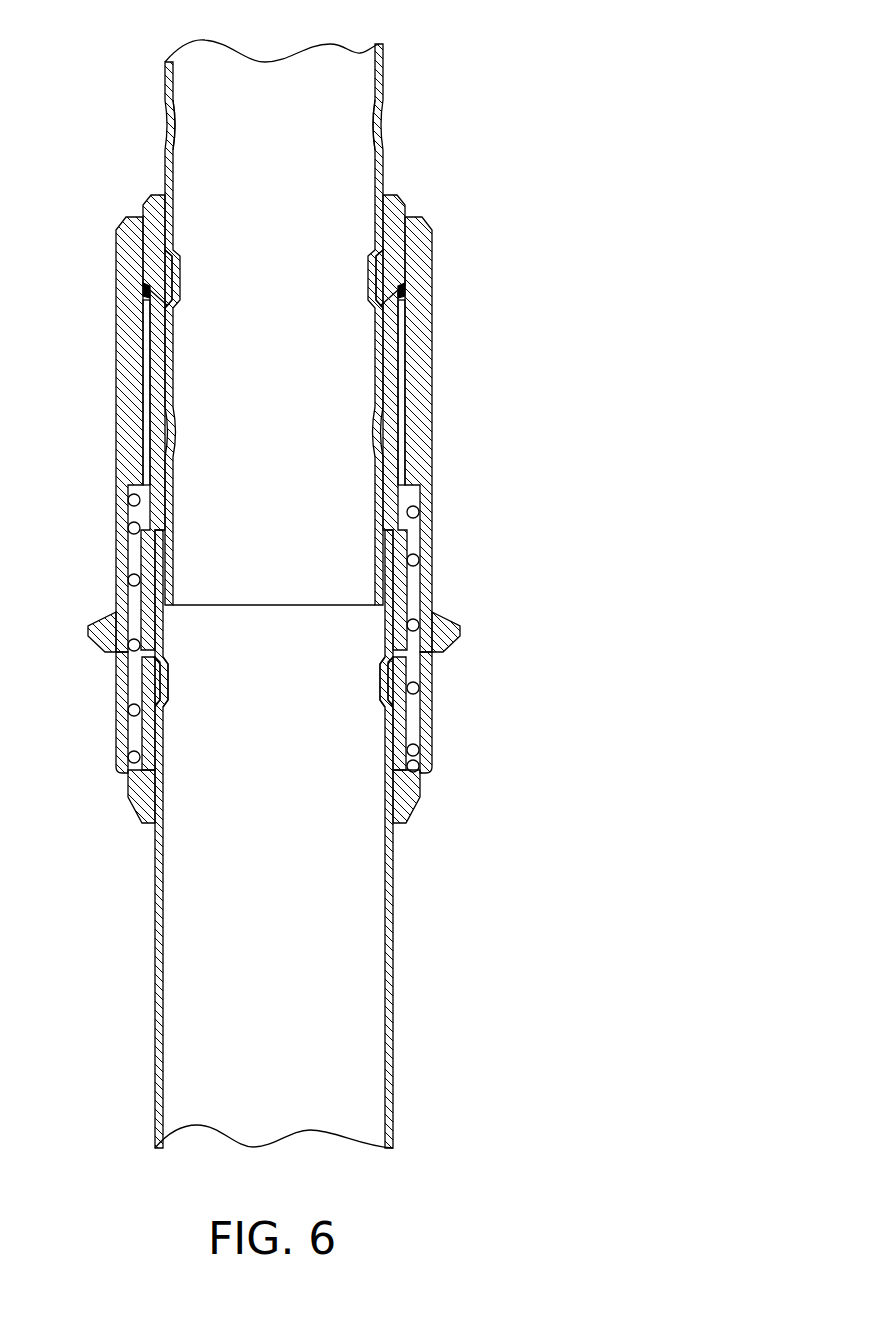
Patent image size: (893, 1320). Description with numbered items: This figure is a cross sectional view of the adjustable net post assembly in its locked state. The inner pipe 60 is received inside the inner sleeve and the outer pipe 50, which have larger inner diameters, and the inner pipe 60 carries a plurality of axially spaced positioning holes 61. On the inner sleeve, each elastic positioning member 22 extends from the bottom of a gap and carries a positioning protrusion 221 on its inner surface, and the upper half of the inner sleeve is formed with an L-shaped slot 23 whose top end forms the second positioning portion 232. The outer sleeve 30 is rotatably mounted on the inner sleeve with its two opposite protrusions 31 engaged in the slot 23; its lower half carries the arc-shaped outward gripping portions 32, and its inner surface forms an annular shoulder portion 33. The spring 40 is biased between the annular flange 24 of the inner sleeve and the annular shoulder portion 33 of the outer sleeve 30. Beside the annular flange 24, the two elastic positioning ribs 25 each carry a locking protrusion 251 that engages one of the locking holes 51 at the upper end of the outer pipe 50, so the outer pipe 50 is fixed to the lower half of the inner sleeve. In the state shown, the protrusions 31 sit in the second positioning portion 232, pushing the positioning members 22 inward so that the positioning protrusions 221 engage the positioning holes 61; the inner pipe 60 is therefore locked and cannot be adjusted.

The inner pipe 60 is at (383, 170).
The positioning holes 61 is at (377, 127).
The elastic positioning member 22 is at (396, 207).
The positioning protrusion 221 is at (376, 270).
The second positioning portion 232 is at (402, 292).
The protrusions 31 is at (403, 308).
The slot 23 is at (408, 393).
The outer sleeve 30 is at (328, 434).
The annular shoulder portion 33 is at (426, 486).
The spring 40 is at (434, 607).
The gripping portions 32 is at (462, 628).
The locking protrusion 251 is at (385, 672).
The locking holes 51 is at (385, 692).
The elastic positioning ribs 25 is at (398, 716).
The annular flange 24 is at (412, 783).
The outer pipe 50 is at (393, 930).